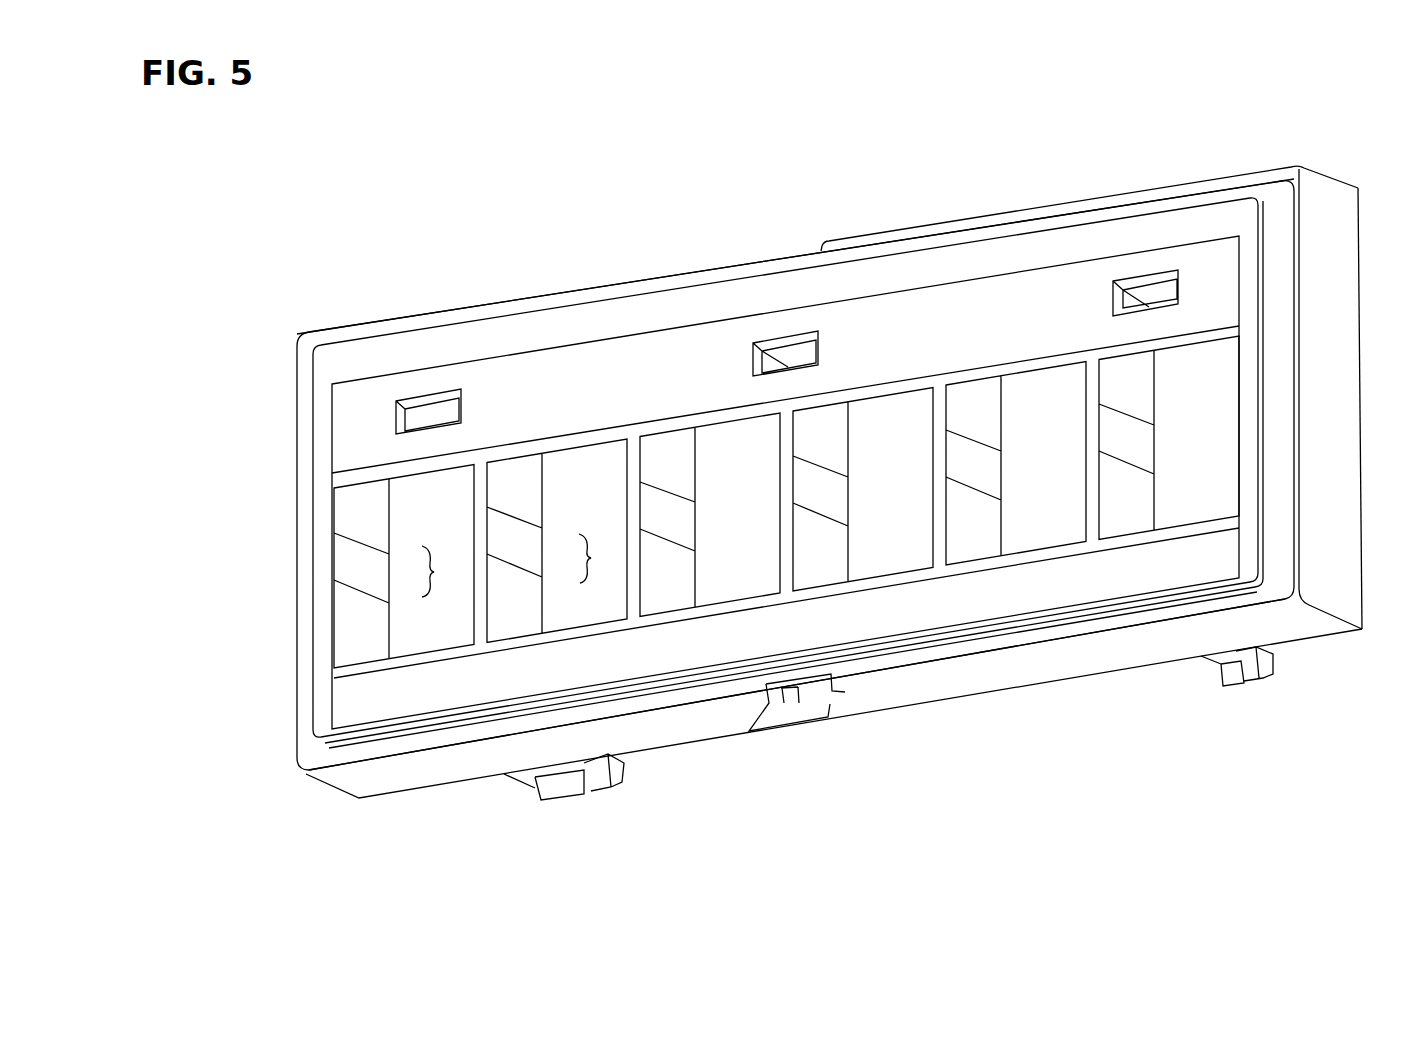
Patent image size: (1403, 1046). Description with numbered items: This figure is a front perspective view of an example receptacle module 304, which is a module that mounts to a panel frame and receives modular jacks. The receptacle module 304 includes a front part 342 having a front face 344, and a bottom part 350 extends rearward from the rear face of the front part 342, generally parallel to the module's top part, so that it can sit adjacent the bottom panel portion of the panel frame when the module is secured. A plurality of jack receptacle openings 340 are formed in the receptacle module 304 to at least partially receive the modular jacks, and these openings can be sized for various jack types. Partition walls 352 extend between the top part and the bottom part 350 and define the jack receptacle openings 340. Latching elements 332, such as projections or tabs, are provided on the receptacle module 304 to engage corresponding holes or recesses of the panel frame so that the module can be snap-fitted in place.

The receptacle module 304 is at (277, 266).
The latching elements 332 is at (567, 798).
The jack receptacle openings 340 is at (423, 570).
The front part 342 is at (1043, 249).
The front face 344 is at (943, 262).
The bottom part 350 is at (1078, 662).
The partition walls 352 is at (525, 483).